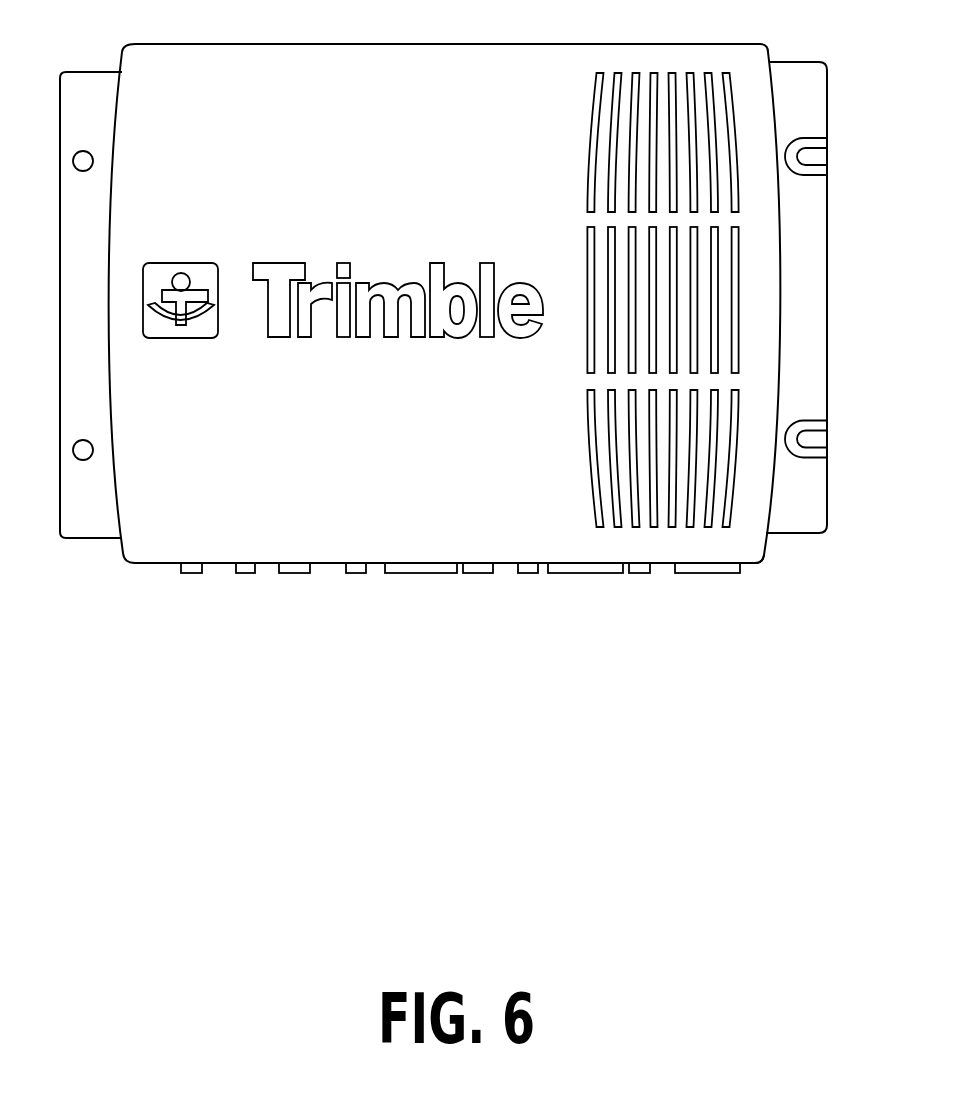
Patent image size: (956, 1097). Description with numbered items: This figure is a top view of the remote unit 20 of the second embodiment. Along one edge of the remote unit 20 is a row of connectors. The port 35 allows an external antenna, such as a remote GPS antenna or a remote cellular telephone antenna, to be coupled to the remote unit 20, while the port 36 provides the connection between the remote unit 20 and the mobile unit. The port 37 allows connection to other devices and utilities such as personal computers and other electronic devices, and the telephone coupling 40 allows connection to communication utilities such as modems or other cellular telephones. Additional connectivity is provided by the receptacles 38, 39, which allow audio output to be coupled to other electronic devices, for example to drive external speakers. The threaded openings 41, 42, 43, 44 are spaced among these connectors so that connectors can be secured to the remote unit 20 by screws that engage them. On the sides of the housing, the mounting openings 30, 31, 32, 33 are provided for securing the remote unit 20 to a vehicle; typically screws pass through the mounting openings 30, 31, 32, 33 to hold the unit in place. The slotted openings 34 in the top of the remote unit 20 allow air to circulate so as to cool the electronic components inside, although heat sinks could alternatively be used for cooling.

The remote unit 20 is at (492, 44).
The mounting opening 30 is at (817, 157).
The mounting opening 31 is at (817, 439).
The mounting opening 32 is at (83, 152).
The mounting opening 33 is at (83, 442).
The slotted openings 34 is at (766, 563).
The port 35 is at (708, 579).
The port 36 is at (586, 579).
The port 37 is at (421, 579).
The receptacle 38 is at (246, 579).
The receptacle 39 is at (192, 579).
The telephone coupling 40 is at (294, 579).
The threaded opening 41 is at (356, 579).
The threaded opening 42 is at (478, 579).
The threaded opening 43 is at (528, 579).
The threaded opening 44 is at (640, 579).